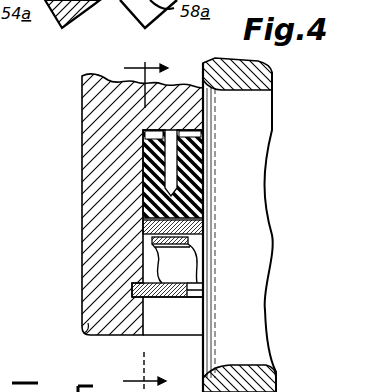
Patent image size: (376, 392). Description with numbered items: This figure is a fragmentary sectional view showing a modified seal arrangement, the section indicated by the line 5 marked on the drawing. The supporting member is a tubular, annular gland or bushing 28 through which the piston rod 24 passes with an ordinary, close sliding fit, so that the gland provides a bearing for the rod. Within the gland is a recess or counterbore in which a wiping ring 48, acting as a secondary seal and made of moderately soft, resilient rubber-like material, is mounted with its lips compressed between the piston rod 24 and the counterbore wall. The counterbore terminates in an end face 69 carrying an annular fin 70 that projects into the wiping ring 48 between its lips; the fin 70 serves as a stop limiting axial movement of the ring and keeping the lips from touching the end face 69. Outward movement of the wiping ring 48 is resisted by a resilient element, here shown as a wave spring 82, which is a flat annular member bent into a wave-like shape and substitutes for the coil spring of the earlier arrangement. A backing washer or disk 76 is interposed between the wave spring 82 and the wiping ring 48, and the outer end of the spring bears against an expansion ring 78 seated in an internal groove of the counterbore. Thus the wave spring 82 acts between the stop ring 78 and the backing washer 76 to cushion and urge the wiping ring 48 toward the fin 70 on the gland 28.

The section line 5- 5 is at (136, 222).
The piston rod 24 is at (258, 140).
The gland 28 is at (86, 334).
The wiping ring 48 is at (172, 163).
The end face 69 is at (150, 133).
The annular fin 70 is at (188, 134).
The backing washer 76 is at (196, 232).
The expansion ring 78 is at (192, 292).
The wave spring 82 is at (192, 258).